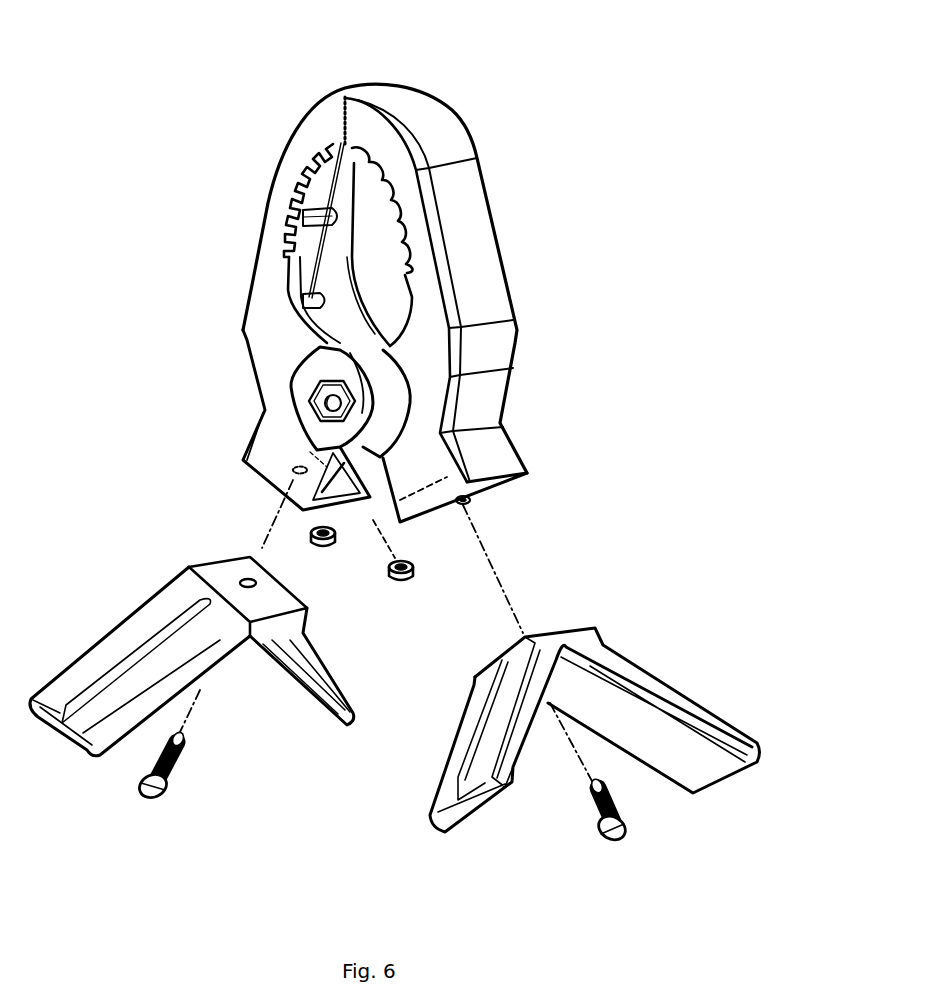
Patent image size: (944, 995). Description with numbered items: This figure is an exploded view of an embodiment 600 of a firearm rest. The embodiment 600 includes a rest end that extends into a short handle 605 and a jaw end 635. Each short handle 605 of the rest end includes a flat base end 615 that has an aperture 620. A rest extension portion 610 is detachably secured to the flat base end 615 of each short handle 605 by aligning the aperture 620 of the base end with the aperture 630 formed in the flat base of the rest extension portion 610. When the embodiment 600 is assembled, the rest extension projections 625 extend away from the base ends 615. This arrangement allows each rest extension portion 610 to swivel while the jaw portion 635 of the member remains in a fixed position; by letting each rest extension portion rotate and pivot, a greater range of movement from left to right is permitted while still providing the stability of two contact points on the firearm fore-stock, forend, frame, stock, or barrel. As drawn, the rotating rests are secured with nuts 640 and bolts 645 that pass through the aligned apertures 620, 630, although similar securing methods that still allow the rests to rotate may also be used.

The embodiment 600 is at (490, 130).
The short handle 605 is at (385, 332).
The rest extension portion 610 is at (395, 694).
The flat base end 615 is at (263, 462).
The aperture 620 is at (302, 472).
The rest extension projections 625 is at (133, 648).
The aperture 630 is at (255, 581).
The jaw end 635 is at (348, 199).
The nuts 640 is at (332, 547).
The bolts 645 is at (180, 763).